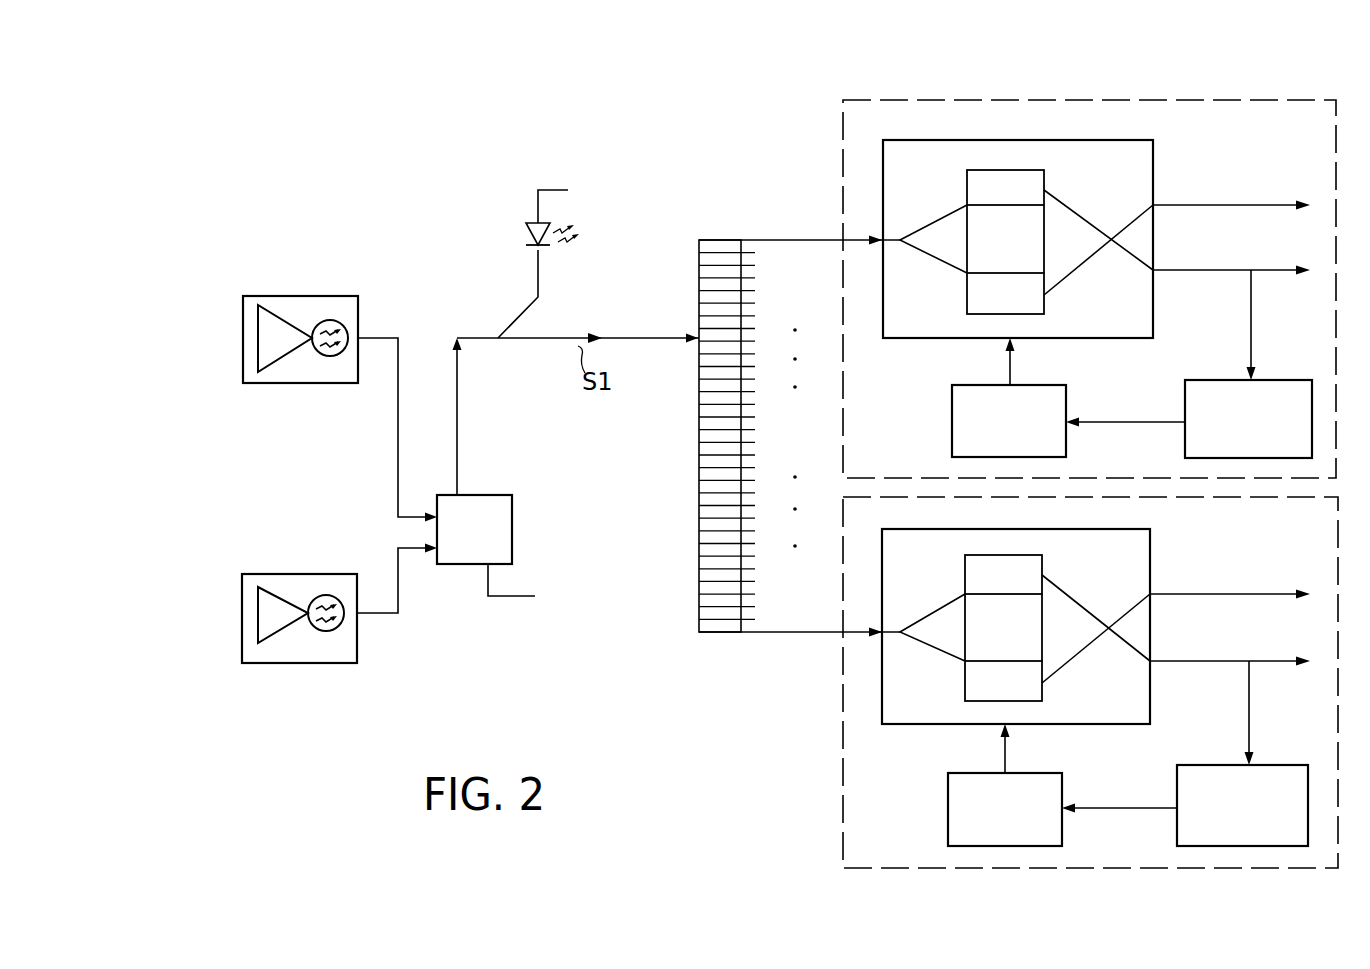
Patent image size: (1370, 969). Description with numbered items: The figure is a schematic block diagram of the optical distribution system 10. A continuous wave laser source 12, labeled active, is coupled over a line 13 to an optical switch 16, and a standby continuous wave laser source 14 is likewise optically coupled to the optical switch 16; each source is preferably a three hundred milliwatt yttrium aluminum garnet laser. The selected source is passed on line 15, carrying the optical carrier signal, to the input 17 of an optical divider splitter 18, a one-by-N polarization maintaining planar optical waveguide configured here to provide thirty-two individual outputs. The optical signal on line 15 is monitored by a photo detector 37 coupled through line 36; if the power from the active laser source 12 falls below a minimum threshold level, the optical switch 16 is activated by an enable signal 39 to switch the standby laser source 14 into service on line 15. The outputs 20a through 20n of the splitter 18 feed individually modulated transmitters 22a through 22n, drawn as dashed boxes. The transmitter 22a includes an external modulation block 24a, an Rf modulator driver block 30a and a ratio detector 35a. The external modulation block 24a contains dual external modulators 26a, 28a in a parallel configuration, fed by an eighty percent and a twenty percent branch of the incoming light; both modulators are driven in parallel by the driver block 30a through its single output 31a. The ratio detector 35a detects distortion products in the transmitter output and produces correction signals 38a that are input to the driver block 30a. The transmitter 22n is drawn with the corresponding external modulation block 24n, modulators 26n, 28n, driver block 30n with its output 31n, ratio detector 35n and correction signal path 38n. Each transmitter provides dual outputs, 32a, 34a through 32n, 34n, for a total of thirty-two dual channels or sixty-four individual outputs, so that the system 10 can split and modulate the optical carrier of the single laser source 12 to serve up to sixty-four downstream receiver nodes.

The system 10 is at (664, 96).
The continuous wave laser source 12 is at (330, 296).
The optical line from active source 13 is at (398, 452).
The standby cw laser source 14 is at (325, 573).
The line 15 is at (458, 422).
The optical switch 16 is at (505, 495).
The input 17 is at (697, 334).
The optical divider splitter 18 is at (764, 416).
The output 20a is at (773, 238).
The output 20n is at (768, 635).
The transmitter 22a is at (1128, 99).
The transmitter 22n is at (1057, 870).
The external modulation block 24a is at (1048, 138).
The optical coupler/modulator assembly 24n is at (1155, 552).
The external modulator 26a is at (1046, 183).
The first modulator (80% path) 26n is at (1044, 570).
The external modulator 28a is at (1046, 300).
The second modulator (20% path) 28n is at (1044, 690).
The Rf modulator driver block 30a is at (1068, 397).
The modulator driver 30n is at (1063, 786).
The single output 31a is at (1008, 365).
The driver-to-modulator control line 31n is at (1003, 752).
The output 32a is at (1198, 204).
The output 32n is at (1230, 594).
The output 34a is at (1192, 270).
The output 34n is at (1215, 660).
The ratio detector 35a is at (1283, 380).
The ratio detector 35n is at (1282, 765).
The line 36 is at (518, 320).
The photo detector 37 is at (527, 215).
The feedback line from ratio detector 38a is at (1113, 425).
The feedback line from ratio detector 38n is at (1103, 810).
The enable signal 39 is at (507, 598).